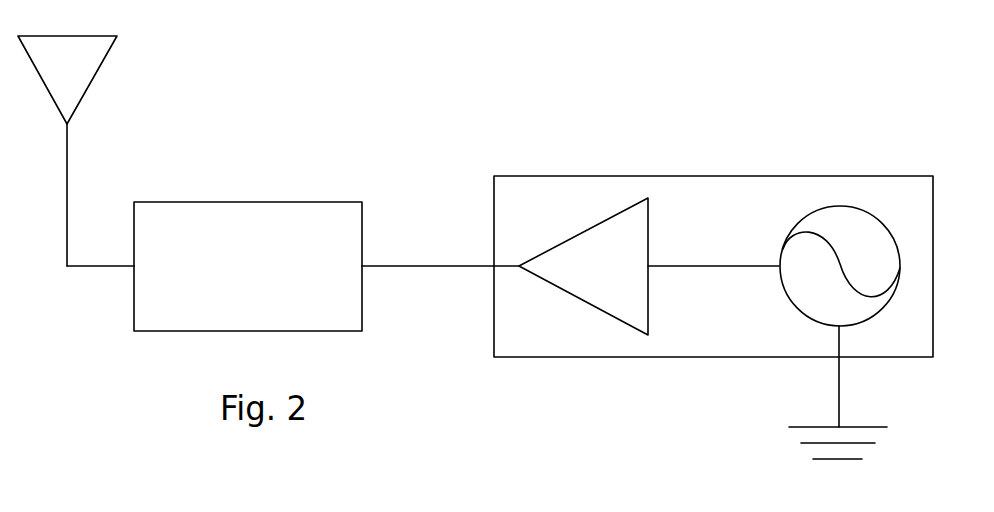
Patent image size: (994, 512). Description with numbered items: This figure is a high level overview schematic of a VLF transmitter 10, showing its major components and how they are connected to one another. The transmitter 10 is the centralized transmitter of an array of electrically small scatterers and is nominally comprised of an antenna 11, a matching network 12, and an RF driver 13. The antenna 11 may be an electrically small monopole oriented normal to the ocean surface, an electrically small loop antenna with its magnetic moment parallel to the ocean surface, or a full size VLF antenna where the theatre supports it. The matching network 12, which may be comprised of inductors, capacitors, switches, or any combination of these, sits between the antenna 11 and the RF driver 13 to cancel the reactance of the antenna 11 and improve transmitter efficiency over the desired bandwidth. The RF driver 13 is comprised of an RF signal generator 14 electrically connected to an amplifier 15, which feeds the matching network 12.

The central transmitter 10 is at (423, 120).
The antenna 11 is at (155, 80).
The matching network 12 is at (260, 207).
The RF driver 13 is at (713, 291).
The RF signal generator 14 is at (625, 276).
The amplifier 15 is at (833, 227).